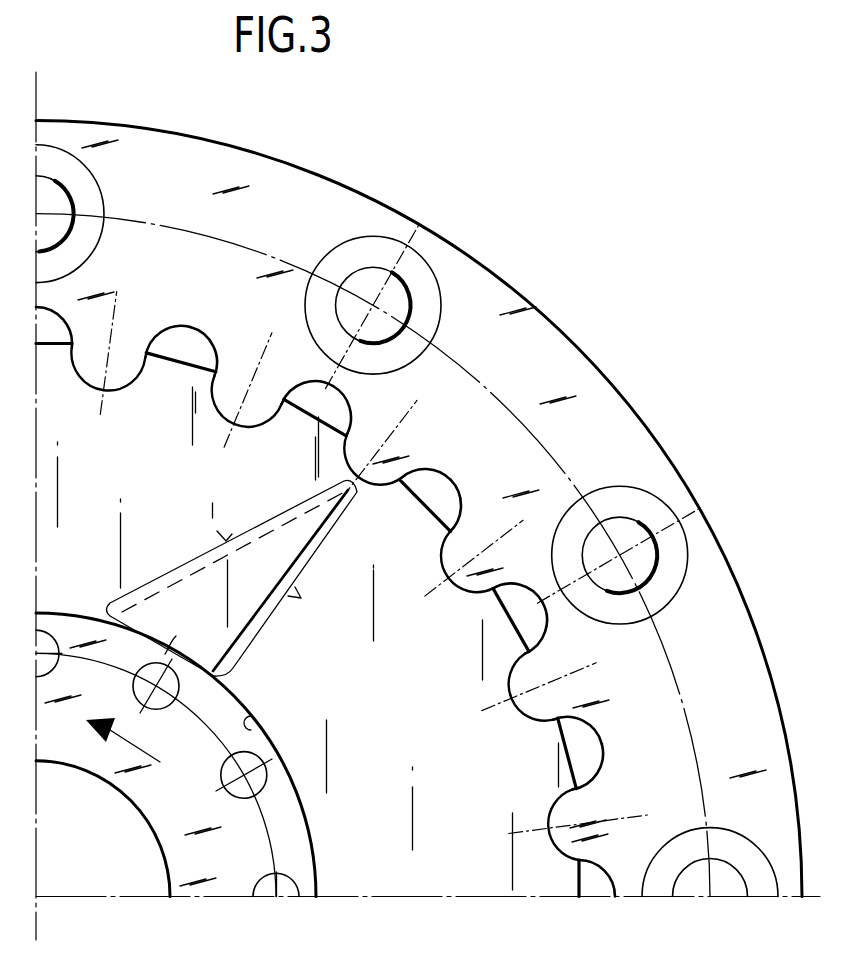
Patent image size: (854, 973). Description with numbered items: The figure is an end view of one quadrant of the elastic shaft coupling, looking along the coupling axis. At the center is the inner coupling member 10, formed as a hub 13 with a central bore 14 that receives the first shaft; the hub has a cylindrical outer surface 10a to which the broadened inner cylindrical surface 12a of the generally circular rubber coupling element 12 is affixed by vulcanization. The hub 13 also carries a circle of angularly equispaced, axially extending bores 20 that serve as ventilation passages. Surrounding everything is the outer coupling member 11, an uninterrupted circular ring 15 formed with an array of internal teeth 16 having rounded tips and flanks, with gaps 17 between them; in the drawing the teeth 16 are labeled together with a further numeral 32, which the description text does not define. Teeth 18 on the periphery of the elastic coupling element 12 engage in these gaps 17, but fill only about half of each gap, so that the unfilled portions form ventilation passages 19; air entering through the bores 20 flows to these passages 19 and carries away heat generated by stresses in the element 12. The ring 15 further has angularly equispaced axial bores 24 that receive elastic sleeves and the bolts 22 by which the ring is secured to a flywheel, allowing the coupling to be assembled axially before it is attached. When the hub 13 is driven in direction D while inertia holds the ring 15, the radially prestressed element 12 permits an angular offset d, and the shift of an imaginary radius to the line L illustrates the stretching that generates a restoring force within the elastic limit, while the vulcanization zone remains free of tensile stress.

The inner coupling member 10 is at (182, 757).
The cylindrical outer surface 10a is at (47, 613).
The outer coupling member 11 is at (309, 158).
The elastic coupling element 12 is at (468, 850).
The inner cylindrical surface 12a is at (252, 720).
The hub 13 is at (220, 855).
The central bore 14 is at (100, 878).
The circular ring 15 is at (572, 395).
The internal teeth 16 is at (342, 580).
The gaps 17 is at (193, 338).
The teeth 18 is at (170, 376).
The ventilation passages 19 is at (177, 338).
The axially extending bores 20 is at (220, 776).
The bolts 22 is at (400, 282).
The axial bores 24 is at (376, 242).
The insert 32 is at (307, 580).